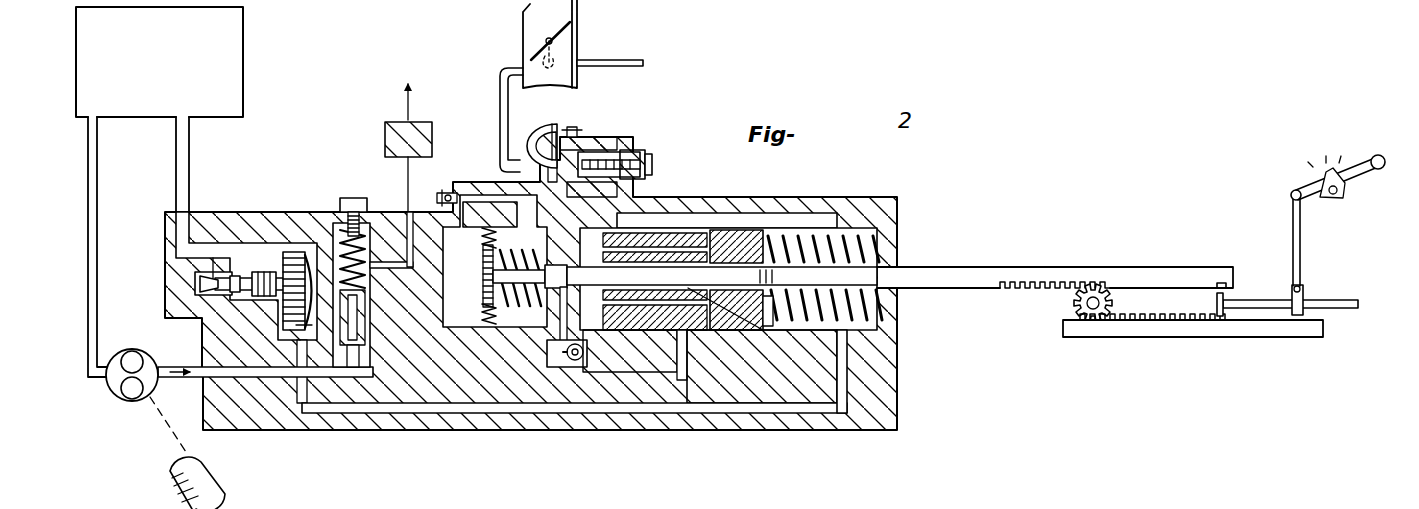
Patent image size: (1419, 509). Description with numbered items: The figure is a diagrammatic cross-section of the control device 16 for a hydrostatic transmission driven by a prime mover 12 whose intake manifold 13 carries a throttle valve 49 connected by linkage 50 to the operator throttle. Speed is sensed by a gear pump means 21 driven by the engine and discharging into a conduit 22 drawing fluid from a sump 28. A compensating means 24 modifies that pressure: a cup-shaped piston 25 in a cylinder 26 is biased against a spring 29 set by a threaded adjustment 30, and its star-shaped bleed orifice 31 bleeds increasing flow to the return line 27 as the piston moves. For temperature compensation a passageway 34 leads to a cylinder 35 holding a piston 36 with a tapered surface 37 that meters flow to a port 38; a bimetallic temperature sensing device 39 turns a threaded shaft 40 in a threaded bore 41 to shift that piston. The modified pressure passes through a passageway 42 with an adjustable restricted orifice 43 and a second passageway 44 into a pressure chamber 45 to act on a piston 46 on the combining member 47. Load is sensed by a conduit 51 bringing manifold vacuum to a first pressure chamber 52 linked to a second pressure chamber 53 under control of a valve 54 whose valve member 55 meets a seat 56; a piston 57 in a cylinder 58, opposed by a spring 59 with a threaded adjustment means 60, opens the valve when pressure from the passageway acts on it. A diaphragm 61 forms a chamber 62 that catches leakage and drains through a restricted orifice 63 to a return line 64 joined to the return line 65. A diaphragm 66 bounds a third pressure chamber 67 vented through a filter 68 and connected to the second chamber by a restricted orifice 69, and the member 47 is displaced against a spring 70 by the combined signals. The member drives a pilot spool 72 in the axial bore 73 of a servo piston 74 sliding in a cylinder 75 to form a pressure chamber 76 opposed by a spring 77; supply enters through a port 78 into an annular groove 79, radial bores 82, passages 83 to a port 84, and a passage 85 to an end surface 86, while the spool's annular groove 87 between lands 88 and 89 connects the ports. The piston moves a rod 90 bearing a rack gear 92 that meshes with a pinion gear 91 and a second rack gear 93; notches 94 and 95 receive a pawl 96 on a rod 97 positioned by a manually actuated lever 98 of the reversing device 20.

The prime mover 12 is at (205, 482).
The intake manifold 13 is at (578, 45).
The control device 16 is at (708, 126).
The reversing device 20 is at (1073, 350).
The pump means 21 is at (118, 398).
The conduit 22 is at (193, 367).
The compensating means 24 is at (340, 196).
The cup-shaped piston 25 is at (372, 346).
The cylinder 26 is at (360, 357).
The return line 27 is at (190, 165).
The sump 28 is at (162, 78).
The spring 29 is at (370, 240).
The threaded adjustment 30 is at (360, 202).
The bleed orifice 31 is at (368, 320).
The passageway 34 is at (245, 346).
The cylinder 35 is at (250, 285).
The piston 36 is at (200, 286).
The tapered surface 37 is at (232, 296).
The port 38 is at (217, 252).
The temperature sensing device 39 is at (297, 270).
The threaded shaft 40 is at (275, 282).
The threaded bore 41 is at (273, 263).
The passageway 42 is at (547, 350).
The restricted orifice 43 is at (568, 364).
The second passageway 44 is at (565, 335).
The pressure chamber 45 is at (498, 252).
The piston 46 is at (548, 275).
The member 47 is at (483, 265).
The throttle valve 49 is at (525, 45).
The linkage 50 is at (625, 60).
The conduit 51 is at (500, 103).
The first pressure chamber 52 is at (510, 200).
The second pressure chamber 53 is at (510, 330).
The valve 54 is at (556, 124).
The valve member 55 is at (570, 193).
The seat 56 is at (542, 125).
The piston 57 is at (590, 148).
The cylinder 58 is at (643, 152).
The spring 59 is at (643, 183).
The threaded adjustment means 60 is at (652, 158).
The diaphragm 61 is at (546, 123).
The chamber 62 is at (573, 128).
The restricted orifice 63 is at (598, 124).
The return line 64 is at (815, 207).
The return line 65 is at (802, 410).
The diaphragm 66 is at (483, 307).
The third pressure chamber 67 is at (440, 203).
The filter 68 is at (385, 124).
The restricted orifice 69 is at (455, 193).
The spring 70 is at (532, 318).
The pilot spool 72 is at (700, 225).
The axial bore 73 is at (612, 295).
The servo piston 74 is at (743, 218).
The cylinder 75 is at (800, 226).
The pressure chamber 76 is at (592, 322).
The spring 77 is at (852, 247).
The port 78 is at (692, 355).
The annular groove 79 is at (660, 330).
The radial bores 82 is at (680, 305).
The passages 83 is at (615, 237).
The port 84 is at (712, 240).
The passage 85 is at (762, 312).
The end surface 86 is at (772, 277).
The annular groove 87 is at (700, 240).
The land 88 is at (676, 307).
The land 89 is at (706, 230).
The rod 90 is at (962, 273).
The pinion gear 91 is at (1100, 286).
The rack gear 92 is at (1037, 297).
The rack gear 93 is at (1152, 322).
The notch 94 is at (1217, 282).
The notch 95 is at (1222, 326).
The pawl 96 is at (1215, 298).
The rod 97 is at (1262, 300).
The manually actuated lever 98 is at (1350, 181).